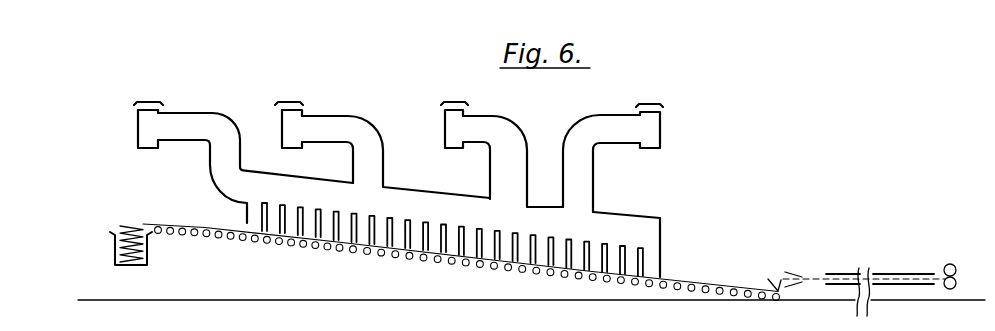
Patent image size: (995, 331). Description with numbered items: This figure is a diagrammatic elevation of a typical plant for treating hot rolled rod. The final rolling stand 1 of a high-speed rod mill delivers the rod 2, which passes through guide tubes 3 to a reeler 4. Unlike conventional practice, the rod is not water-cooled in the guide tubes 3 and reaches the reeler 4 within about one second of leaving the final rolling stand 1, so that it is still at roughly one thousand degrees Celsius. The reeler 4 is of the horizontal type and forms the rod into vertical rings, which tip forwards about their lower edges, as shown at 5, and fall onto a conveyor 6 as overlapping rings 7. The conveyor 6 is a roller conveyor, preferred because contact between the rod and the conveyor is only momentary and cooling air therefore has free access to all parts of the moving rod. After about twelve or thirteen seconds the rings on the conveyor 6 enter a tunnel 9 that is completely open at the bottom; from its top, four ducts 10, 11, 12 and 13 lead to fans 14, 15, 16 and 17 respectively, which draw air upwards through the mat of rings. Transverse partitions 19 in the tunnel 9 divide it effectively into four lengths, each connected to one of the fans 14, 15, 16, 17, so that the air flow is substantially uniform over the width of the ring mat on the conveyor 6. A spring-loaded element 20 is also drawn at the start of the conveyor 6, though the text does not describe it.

The final rolling stand 1 is at (957, 268).
The rod 2 is at (898, 275).
The guide tubes 3 is at (838, 275).
The reeler 4 is at (800, 277).
The tipping rings 5 is at (770, 281).
The conveyor 6 is at (717, 294).
The overlapping rings 7 is at (689, 280).
The tunnel 9 is at (630, 221).
The duct 10 is at (590, 178).
The duct 11 is at (505, 169).
The duct 12 is at (374, 166).
The duct 13 is at (213, 167).
The fan 14 is at (660, 128).
The fan 15 is at (445, 121).
The fan 16 is at (282, 120).
The fan 17 is at (137, 119).
The transverse partitions 19 is at (353, 210).
The spring tensioner 20 is at (113, 250).